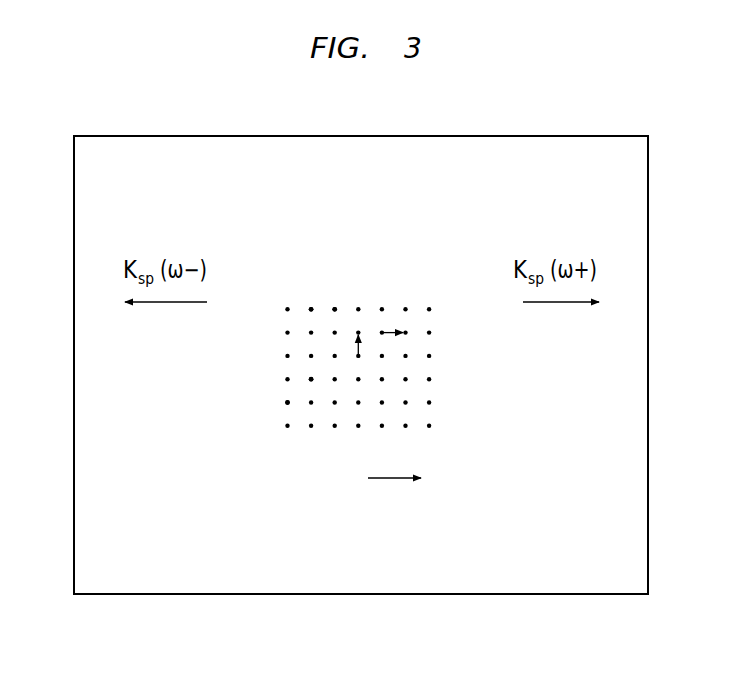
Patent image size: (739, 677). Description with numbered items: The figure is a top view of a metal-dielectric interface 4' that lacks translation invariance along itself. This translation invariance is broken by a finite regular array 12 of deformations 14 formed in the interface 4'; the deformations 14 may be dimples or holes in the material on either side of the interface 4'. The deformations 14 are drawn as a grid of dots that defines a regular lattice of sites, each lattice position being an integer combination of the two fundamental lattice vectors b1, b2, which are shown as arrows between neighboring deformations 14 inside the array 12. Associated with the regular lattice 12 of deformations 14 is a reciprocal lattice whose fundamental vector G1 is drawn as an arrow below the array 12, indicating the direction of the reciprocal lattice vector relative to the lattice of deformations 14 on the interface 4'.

The finite regular array 12 is at (457, 305).
The deformations 14 is at (335, 308).
The metal-dielectric interface 4' is at (361, 365).
The first fundamental lattice vector b1 is at (394, 331).
The second fundamental lattice vector b2 is at (365, 343).
The reciprocal lattice fundamental vector G1 is at (394, 499).